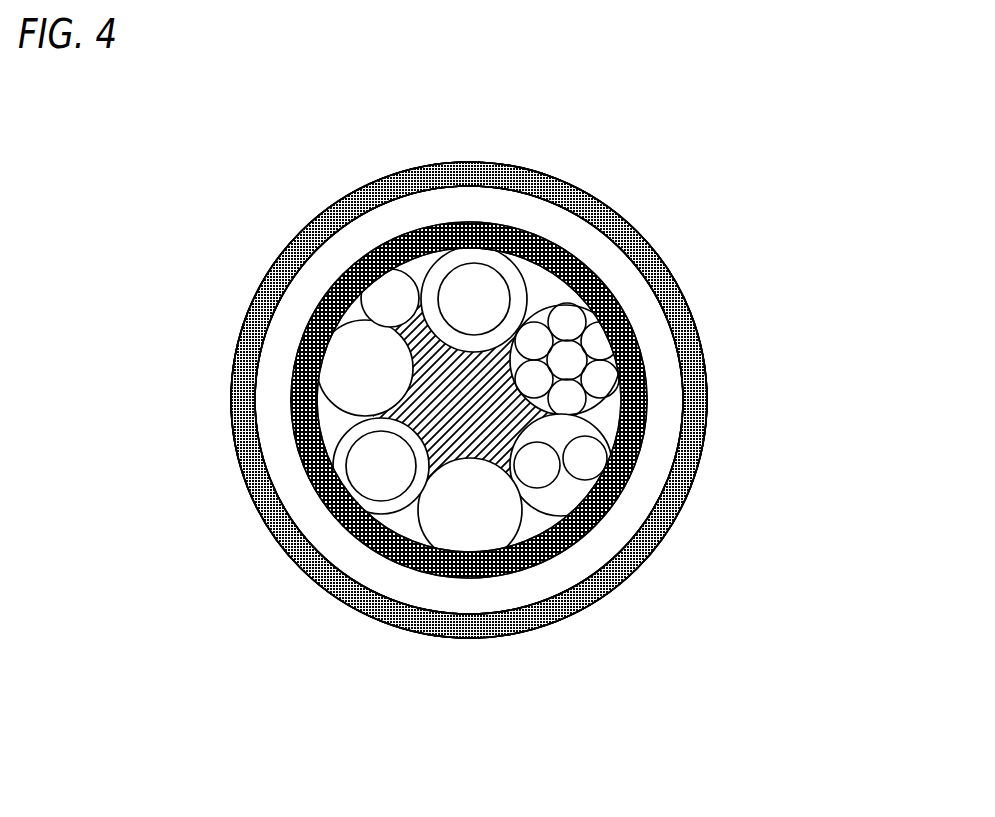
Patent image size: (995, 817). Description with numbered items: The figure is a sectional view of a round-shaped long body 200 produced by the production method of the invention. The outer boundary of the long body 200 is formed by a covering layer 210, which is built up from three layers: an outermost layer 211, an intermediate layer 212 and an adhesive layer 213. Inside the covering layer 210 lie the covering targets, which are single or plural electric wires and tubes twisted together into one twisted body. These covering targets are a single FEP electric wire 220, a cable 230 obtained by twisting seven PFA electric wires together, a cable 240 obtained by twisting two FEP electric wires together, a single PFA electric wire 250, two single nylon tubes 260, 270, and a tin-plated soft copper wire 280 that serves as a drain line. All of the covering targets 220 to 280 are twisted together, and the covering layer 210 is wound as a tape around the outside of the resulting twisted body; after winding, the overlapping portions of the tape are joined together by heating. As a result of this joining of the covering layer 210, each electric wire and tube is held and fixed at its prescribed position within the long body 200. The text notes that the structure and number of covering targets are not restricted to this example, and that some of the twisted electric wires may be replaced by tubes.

The long body 200 is at (601, 176).
The covering layer 210 is at (469, 400).
The outermost layer 211 is at (683, 507).
The intermediate layer 212 is at (563, 593).
The adhesive layer 213 is at (488, 557).
The FEP electric wire 220 is at (325, 380).
The cable of seven PFA electric wires 230 is at (610, 367).
The cable of two FEP electric wires 240 is at (570, 493).
The PFA electric wire 250 is at (457, 532).
The nylon tube 260 is at (363, 502).
The nylon tube 270 is at (483, 248).
The tin-plated soft copper wire 280 is at (382, 280).